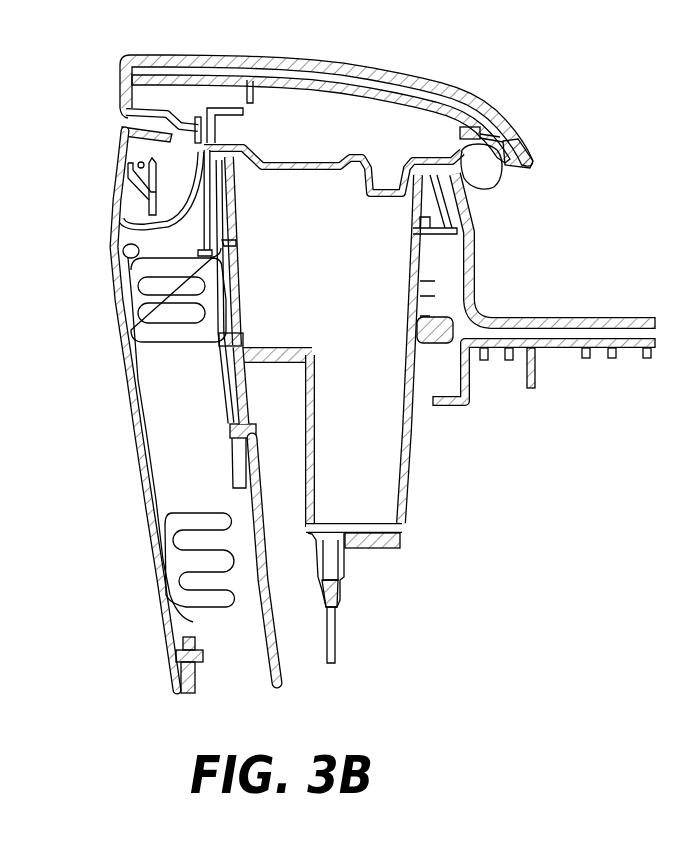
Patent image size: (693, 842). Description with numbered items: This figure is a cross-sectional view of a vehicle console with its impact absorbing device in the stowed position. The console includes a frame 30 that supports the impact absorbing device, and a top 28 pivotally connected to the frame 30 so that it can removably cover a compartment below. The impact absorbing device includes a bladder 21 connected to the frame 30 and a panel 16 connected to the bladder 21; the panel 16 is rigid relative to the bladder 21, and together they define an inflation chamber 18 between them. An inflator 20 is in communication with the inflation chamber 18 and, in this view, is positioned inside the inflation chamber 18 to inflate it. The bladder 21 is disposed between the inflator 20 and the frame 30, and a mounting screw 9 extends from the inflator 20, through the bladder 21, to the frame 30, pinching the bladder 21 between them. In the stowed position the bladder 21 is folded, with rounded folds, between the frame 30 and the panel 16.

The mounting screw 9 is at (243, 341).
The panel 16 is at (125, 380).
The inflation chamber 18 is at (160, 473).
The inflator 20 is at (249, 463).
The bladder 21 is at (245, 391).
The top 28 is at (503, 102).
The frame 30 is at (238, 300).